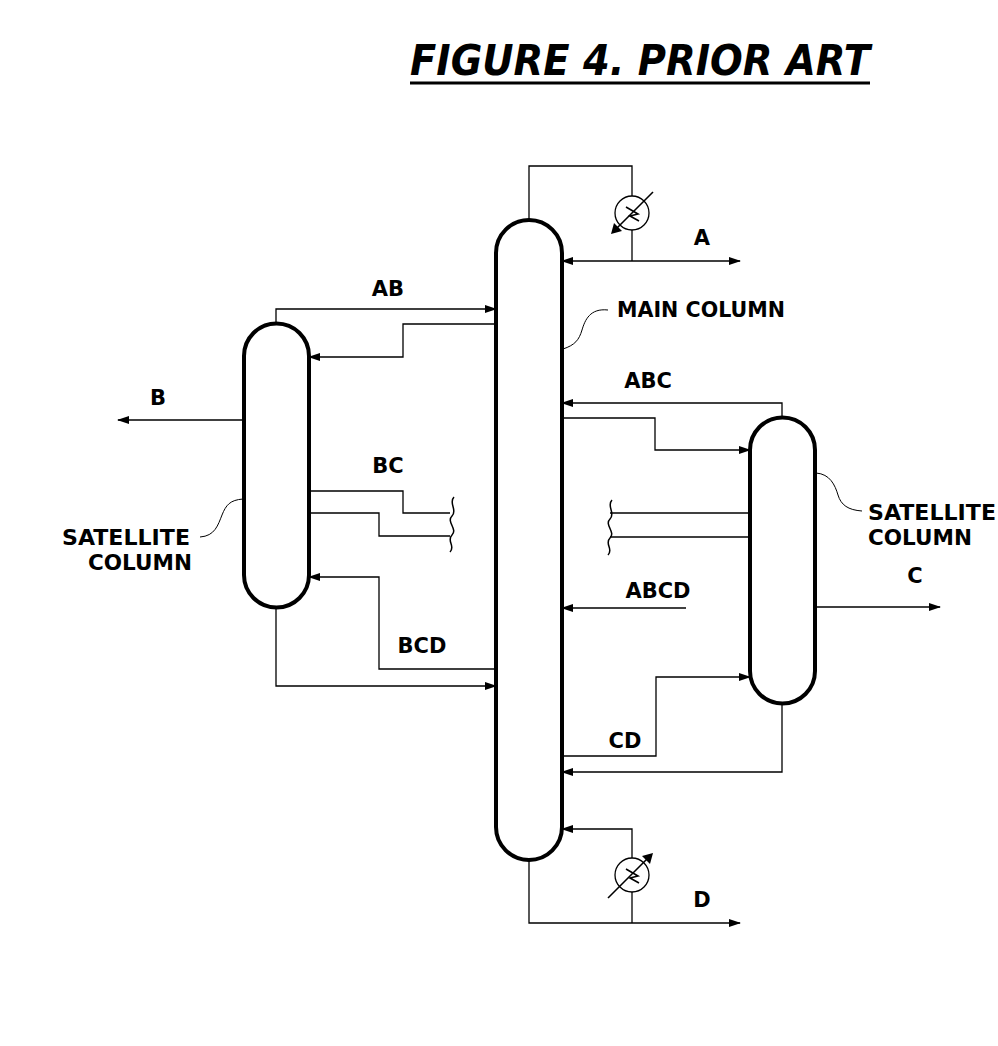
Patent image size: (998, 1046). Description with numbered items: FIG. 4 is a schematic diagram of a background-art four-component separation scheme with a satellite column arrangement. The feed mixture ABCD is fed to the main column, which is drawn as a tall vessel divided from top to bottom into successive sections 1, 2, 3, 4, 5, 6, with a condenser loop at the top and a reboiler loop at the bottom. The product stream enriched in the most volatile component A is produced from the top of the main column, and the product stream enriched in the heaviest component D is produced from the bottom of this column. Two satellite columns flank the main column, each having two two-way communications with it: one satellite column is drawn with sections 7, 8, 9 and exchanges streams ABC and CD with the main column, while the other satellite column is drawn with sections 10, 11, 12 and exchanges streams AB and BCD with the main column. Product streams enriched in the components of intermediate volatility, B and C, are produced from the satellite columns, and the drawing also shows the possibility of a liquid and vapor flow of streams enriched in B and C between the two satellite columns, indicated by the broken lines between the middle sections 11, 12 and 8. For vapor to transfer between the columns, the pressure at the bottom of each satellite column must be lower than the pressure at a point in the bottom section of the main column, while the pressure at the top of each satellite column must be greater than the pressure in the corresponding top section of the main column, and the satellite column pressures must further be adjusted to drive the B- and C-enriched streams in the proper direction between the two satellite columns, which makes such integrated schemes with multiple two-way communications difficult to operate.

The main column section 1 is at (522, 292).
The main column section 2 is at (522, 379).
The main column section 3 is at (522, 535).
The main column section 4 is at (522, 662).
The main column section 5 is at (522, 734).
The main column section 6 is at (522, 812).
The right satellite column section 7 is at (775, 489).
The right satellite column section 8 is at (775, 582).
The right satellite column section 9 is at (775, 668).
The left satellite column section 10 is at (266, 387).
The left satellite column section 11 is at (266, 474).
The left satellite column section 12 is at (266, 562).